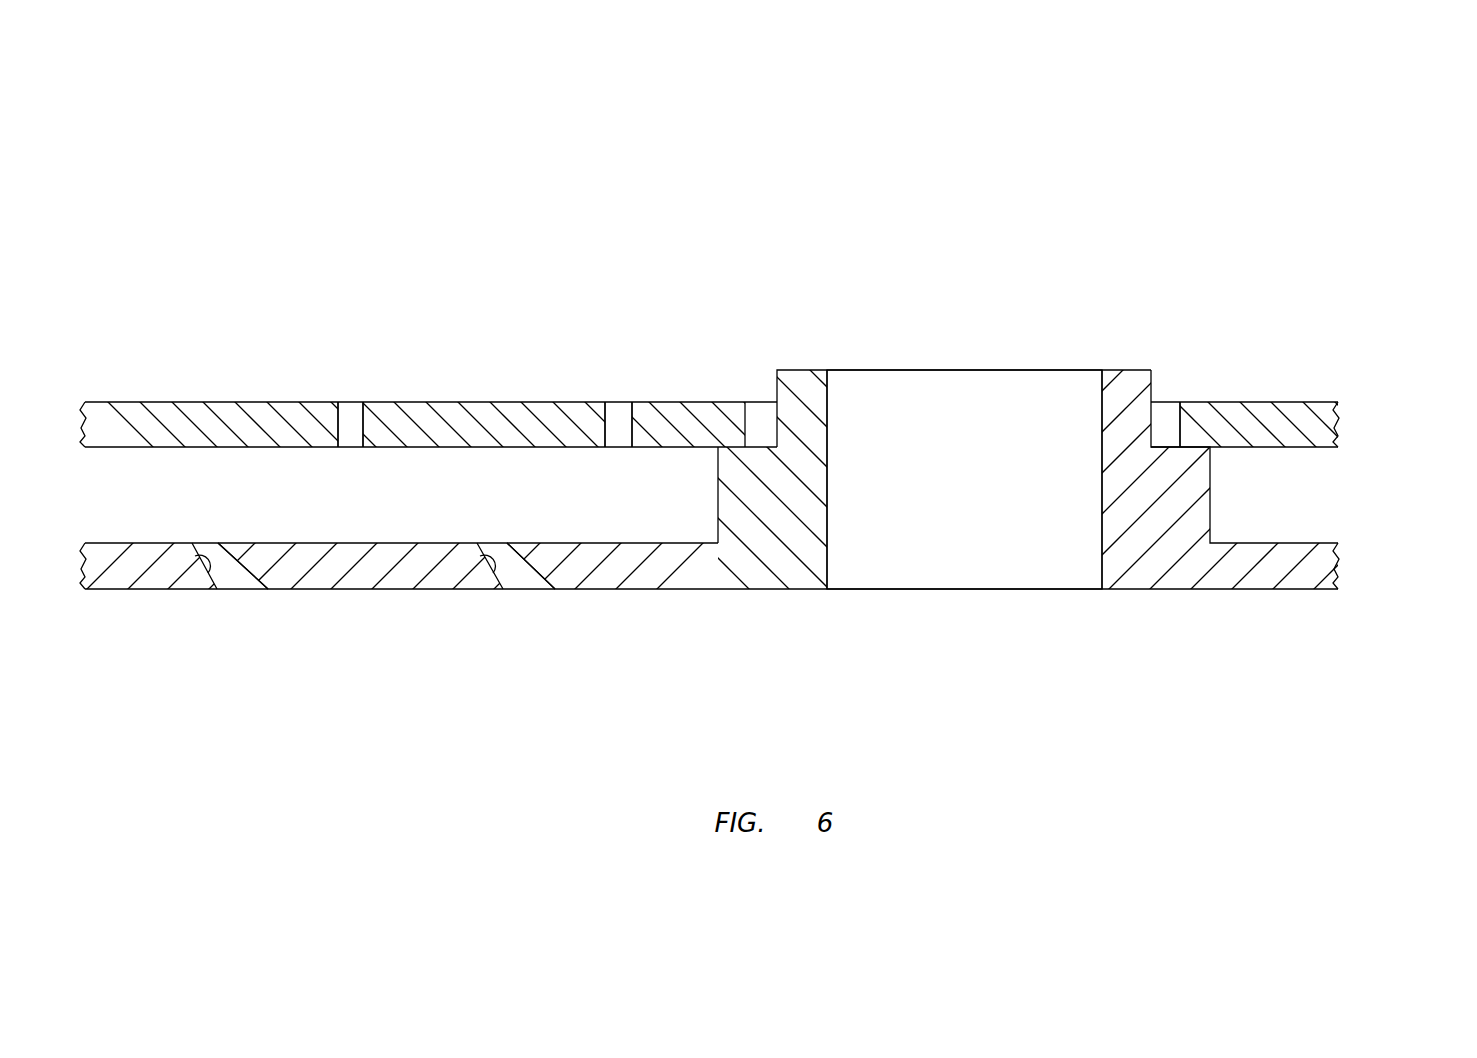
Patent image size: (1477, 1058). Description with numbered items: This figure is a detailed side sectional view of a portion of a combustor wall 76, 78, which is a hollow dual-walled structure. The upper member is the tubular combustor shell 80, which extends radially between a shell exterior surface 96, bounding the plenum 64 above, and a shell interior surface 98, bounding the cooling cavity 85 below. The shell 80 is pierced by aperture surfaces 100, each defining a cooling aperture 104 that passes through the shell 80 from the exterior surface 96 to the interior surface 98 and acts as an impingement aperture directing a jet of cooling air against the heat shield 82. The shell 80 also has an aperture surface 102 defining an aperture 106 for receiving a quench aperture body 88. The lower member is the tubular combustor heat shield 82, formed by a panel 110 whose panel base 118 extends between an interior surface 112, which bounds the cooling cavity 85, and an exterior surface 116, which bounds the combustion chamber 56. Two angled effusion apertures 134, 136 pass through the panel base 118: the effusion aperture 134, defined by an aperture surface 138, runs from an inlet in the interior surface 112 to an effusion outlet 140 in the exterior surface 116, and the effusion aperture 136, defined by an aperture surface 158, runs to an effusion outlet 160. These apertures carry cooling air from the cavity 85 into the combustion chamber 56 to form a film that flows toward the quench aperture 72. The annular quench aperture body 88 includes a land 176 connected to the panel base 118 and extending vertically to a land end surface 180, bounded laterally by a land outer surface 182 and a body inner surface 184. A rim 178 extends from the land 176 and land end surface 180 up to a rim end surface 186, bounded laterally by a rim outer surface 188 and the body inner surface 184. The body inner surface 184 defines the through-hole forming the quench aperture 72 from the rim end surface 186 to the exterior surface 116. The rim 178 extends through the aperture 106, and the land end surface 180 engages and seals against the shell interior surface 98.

The combustion chamber 56 is at (668, 735).
The plenum 64 is at (648, 161).
The quench aperture 72 is at (983, 488).
The combustor wall 76 is at (1317, 159).
The combustor wall 78 is at (1280, 198).
The combustor shell 80 is at (1347, 420).
The combustor heat shield 82 is at (1395, 546).
The cooling cavity 85 is at (117, 511).
The quench aperture body 88 is at (1140, 360).
The shell exterior surface 96 is at (1310, 400).
The shell interior surface 98 is at (1307, 447).
The aperture surface 100 is at (354, 418).
The aperture surface 102 is at (758, 432).
The cooling aperture 104 is at (352, 436).
The aperture 106 is at (1167, 412).
The panel 110 is at (1347, 562).
The interior surface 112 is at (1307, 542).
The exterior surface 116 is at (1308, 589).
The panel base 118 is at (1264, 570).
The effusion aperture 134 is at (519, 588).
The effusion aperture 136 is at (236, 588).
The aperture surface 138 is at (488, 588).
The effusion outlet 140 is at (545, 589).
The aperture surface 158 is at (194, 566).
The effusion outlet 160 is at (258, 589).
The land 176 is at (750, 500).
The rim 178 is at (800, 388).
The land end surface 180 is at (730, 440).
The land outer surface 182 is at (704, 543).
The body inner surface 184 is at (828, 560).
The rim end surface 186 is at (820, 369).
The rim outer surface 188 is at (776, 390).